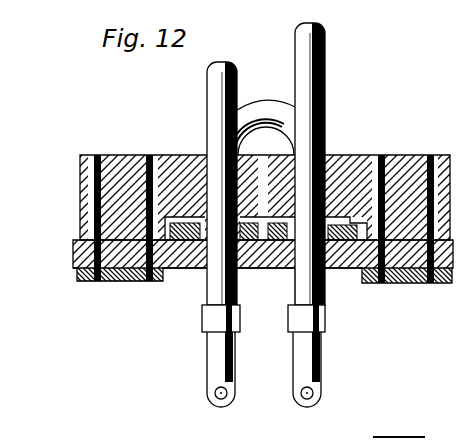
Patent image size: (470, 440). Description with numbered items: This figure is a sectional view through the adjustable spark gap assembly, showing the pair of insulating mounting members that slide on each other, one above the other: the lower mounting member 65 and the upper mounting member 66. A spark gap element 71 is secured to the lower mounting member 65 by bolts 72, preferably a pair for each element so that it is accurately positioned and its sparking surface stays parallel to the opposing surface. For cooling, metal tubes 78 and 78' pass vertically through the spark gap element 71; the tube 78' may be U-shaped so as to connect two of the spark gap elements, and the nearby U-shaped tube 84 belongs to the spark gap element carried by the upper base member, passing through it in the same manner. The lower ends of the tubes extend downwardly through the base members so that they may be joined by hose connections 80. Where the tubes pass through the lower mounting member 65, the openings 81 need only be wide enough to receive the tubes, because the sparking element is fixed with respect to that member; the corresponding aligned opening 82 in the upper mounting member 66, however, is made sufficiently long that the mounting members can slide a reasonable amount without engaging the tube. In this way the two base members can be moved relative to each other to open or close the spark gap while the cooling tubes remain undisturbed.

The lower mounting member 65 is at (360, 270).
The upper mounting member 66 is at (254, 270).
The spark gap element 71 is at (340, 157).
The bolt 72 is at (437, 156).
The metal tube 78 is at (327, 215).
The metal tube 78' is at (204, 234).
The hose connection 80 is at (235, 366).
The opening 81 is at (195, 270).
The aligned opening 82 is at (325, 270).
The U-shaped tube 84 is at (262, 102).